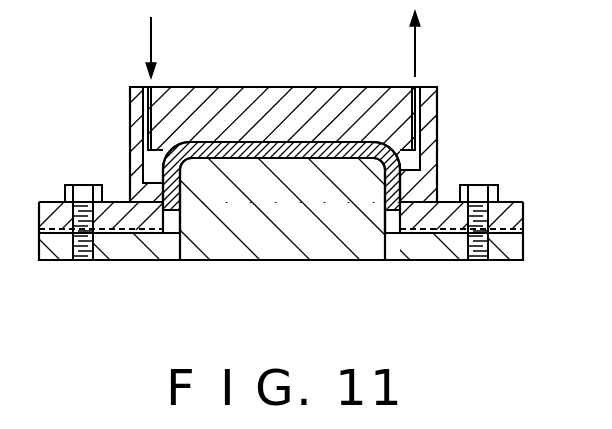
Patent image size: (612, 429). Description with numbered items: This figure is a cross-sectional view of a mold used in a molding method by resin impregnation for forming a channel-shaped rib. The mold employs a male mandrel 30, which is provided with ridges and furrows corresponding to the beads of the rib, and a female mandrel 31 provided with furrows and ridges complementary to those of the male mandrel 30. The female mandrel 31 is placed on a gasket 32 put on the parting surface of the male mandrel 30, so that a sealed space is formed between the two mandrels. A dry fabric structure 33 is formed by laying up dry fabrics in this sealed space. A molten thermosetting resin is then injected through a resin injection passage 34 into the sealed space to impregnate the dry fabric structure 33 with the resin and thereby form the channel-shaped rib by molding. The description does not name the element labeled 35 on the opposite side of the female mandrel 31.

The male mandrel 30 is at (307, 232).
The female mandrel 31 is at (298, 95).
The gasket 32 is at (506, 202).
The dry fabric structure 33 is at (252, 145).
The resin injection passage 34 is at (148, 117).
The right clearance slot 35 is at (418, 102).